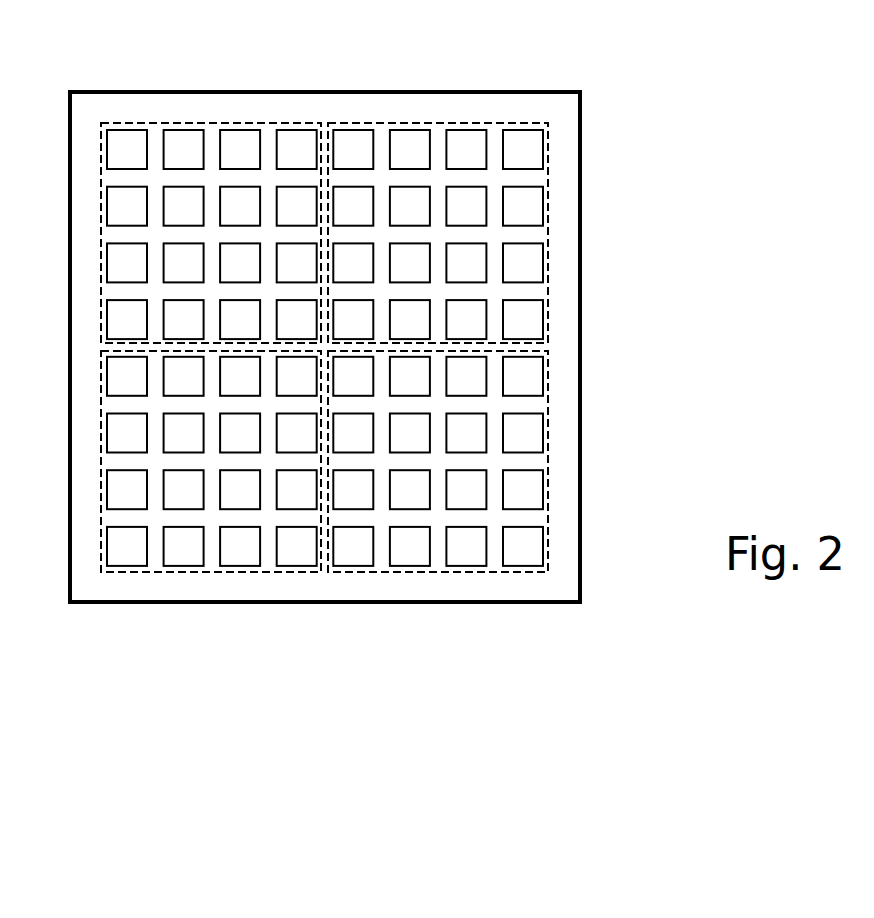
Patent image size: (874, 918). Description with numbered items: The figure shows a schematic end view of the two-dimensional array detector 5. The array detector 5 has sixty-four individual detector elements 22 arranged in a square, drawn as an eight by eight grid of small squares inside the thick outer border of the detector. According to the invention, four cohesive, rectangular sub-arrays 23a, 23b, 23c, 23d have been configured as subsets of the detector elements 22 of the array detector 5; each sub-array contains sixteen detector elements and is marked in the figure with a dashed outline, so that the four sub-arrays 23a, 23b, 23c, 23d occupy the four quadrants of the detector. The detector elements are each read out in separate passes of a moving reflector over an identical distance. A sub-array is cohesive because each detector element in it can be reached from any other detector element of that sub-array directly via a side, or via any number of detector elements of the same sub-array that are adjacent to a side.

The array detector 5 is at (597, 279).
The detector element 22 is at (522, 434).
The sub-array 23a is at (441, 122).
The sub-array 23b is at (437, 573).
The sub-array 23c is at (210, 573).
The sub-array 23d is at (205, 122).